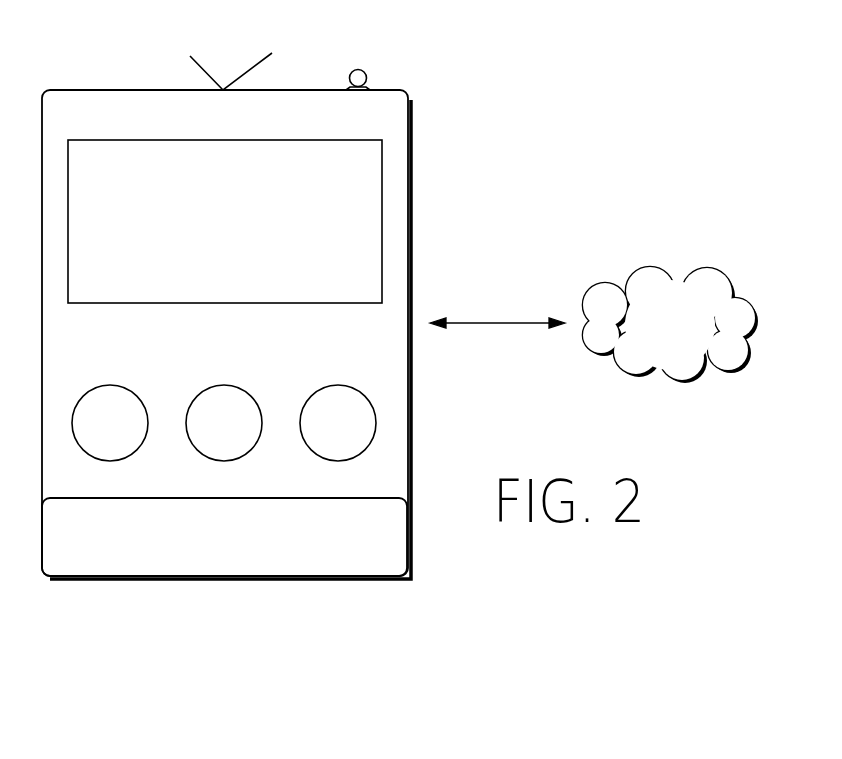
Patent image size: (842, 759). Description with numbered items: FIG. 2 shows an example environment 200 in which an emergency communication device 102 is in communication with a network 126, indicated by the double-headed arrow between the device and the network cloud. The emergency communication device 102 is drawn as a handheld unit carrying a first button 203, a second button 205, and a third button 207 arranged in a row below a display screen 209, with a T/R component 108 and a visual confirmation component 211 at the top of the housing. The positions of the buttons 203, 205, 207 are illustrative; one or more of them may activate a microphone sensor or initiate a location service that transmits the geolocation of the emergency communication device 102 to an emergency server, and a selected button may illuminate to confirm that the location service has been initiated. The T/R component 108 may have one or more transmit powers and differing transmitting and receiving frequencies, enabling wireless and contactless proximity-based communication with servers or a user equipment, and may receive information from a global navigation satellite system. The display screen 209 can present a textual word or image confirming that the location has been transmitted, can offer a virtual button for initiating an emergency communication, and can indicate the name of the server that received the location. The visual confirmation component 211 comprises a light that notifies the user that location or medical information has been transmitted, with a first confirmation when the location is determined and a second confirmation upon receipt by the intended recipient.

The emergency communication device 102 is at (108, 578).
The T/R component 108 is at (176, 73).
The network 126 is at (703, 269).
The environment 200 is at (598, 112).
The first button 203 is at (89, 435).
The second button 205 is at (203, 435).
The third button 207 is at (317, 435).
The display screen 209 is at (204, 233).
The visual confirmation component 211 is at (378, 75).